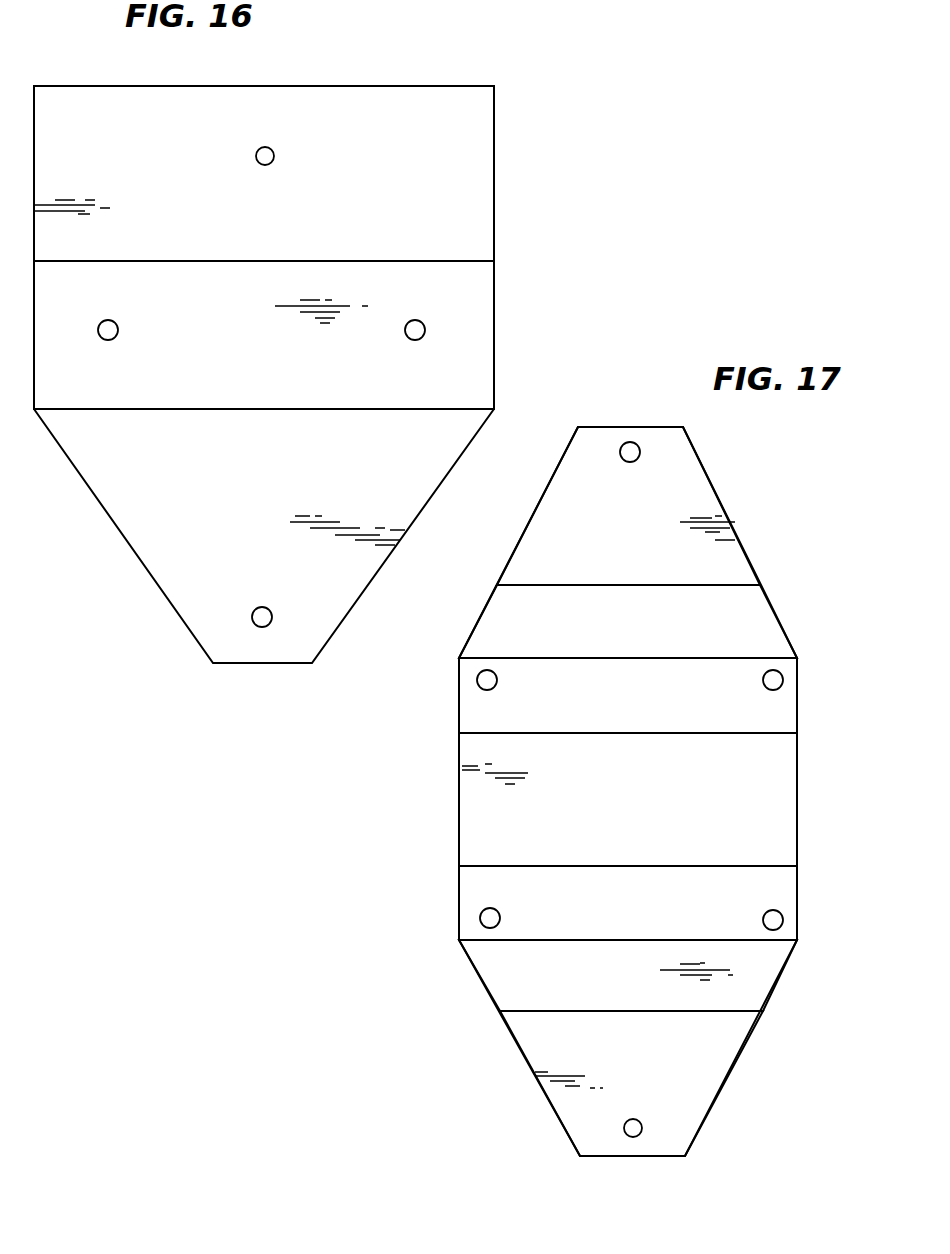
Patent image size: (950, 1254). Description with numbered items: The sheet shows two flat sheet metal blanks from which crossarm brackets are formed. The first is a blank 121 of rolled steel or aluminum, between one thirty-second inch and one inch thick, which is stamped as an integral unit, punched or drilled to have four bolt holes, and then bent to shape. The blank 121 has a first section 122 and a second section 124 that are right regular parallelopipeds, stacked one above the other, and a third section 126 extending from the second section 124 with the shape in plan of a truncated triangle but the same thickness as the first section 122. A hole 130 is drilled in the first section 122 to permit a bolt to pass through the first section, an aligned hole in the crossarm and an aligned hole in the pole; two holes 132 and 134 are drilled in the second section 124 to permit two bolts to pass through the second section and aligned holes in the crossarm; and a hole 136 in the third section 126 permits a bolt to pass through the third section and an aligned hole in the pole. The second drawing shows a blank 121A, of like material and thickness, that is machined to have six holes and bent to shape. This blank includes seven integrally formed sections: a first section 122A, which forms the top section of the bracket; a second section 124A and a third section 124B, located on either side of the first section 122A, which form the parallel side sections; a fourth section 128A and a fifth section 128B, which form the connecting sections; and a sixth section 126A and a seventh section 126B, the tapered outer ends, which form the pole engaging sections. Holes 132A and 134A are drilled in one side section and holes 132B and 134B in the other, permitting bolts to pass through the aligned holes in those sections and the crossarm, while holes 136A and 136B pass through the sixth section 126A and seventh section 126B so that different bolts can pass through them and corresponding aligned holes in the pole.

In FIG. 16, the blank 121 is at (76, 66).
In FIG. 16, the first section 122 is at (298, 98).
In FIG. 16, the second section 124 is at (467, 347).
In FIG. 16, the third section 126 is at (415, 480).
In FIG. 16, the hole 130 is at (270, 150).
In FIG. 16, the hole 132 is at (110, 321).
In FIG. 16, the hole 134 is at (417, 321).
In FIG. 16, the hole 136 is at (262, 608).
In FIG. 17, the blank 121A is at (898, 841).
In FIG. 17, the first section 122A is at (775, 792).
In FIG. 17, the second section 124A is at (760, 888).
In FIG. 17, the third section 124B is at (752, 708).
In FIG. 17, the sixth section 126A is at (710, 1062).
In FIG. 17, the seventh section 126B is at (712, 558).
In FIG. 17, the fourth section 128A is at (752, 980).
In FIG. 17, the fifth section 128B is at (752, 622).
In FIG. 17, the hole 132A is at (480, 678).
In FIG. 17, the hole 132B is at (482, 915).
In FIG. 17, the hole 134A is at (778, 683).
In FIG. 17, the hole 134B is at (778, 922).
In FIG. 17, the hole 136A is at (632, 1138).
In FIG. 17, the hole 136B is at (643, 447).